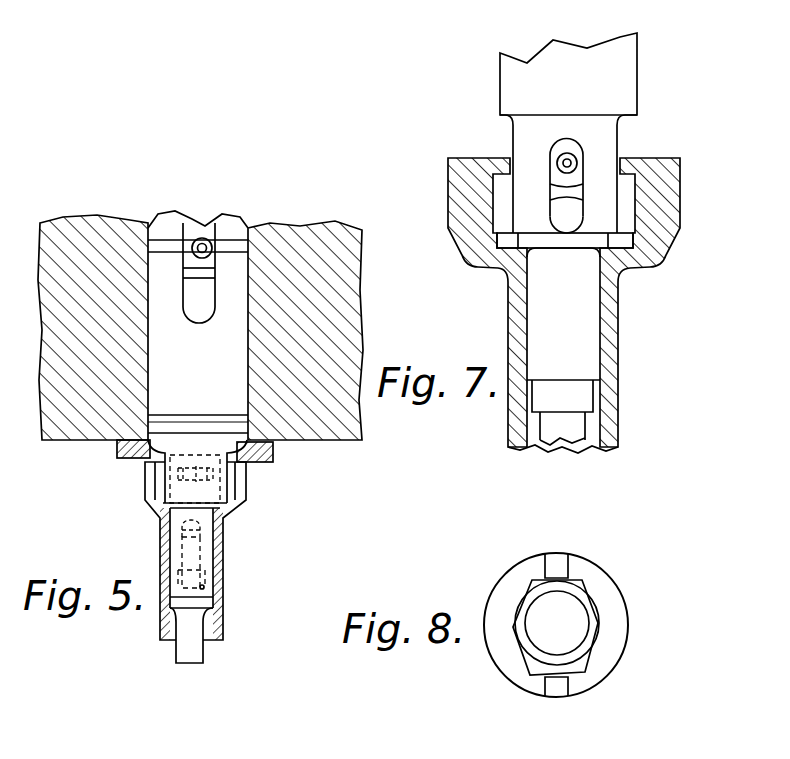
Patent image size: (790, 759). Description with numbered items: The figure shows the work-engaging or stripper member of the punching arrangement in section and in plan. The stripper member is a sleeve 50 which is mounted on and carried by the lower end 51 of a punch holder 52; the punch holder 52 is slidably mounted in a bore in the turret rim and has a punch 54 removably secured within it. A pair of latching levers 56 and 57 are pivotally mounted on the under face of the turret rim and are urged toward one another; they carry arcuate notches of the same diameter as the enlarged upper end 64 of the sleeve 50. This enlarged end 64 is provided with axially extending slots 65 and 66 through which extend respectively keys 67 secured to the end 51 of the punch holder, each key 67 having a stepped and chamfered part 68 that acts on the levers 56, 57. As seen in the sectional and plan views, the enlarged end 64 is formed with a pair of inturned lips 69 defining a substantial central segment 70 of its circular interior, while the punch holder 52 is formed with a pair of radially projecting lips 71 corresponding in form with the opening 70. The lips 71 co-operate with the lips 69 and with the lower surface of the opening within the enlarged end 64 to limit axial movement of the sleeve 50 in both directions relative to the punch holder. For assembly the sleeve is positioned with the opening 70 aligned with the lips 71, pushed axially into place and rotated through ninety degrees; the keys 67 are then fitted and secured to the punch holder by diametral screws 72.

In FIG. 5, the sleeve 50 is at (222, 631).
In FIG. 7, the sleeve 50 is at (618, 338).
In FIG. 5, the lower end of punch holder 51 is at (208, 567).
In FIG. 5, the punch holder 52 is at (238, 283).
In FIG. 7, the punch holder 52 is at (620, 77).
In FIG. 5, the punch 54 is at (193, 657).
In FIG. 5, the latching lever 56 is at (123, 458).
In FIG. 5, the latching lever 57 is at (263, 461).
In FIG. 5, the enlarged upper end of stripping sleeve 64 is at (227, 511).
In FIG. 7, the enlarged upper end of stripping sleeve 64 is at (670, 207).
In FIG. 8, the enlarged upper end of stripping sleeve 64 is at (620, 628).
In FIG. 5, the axially extending slot 65 is at (147, 474).
In FIG. 5, the axially extending slot 66 is at (242, 483).
In FIG. 8, the axially extending slot 66 is at (558, 558).
In FIG. 5, the key 67 is at (157, 521).
In FIG. 7, the key 67 is at (563, 217).
In FIG. 5, the stepped and chamfered part 68 is at (157, 498).
In FIG. 7, the inturned lip 69 is at (510, 160).
In FIG. 8, the central segment (opening) 70 is at (583, 590).
In FIG. 7, the radially projecting lip 71 is at (508, 240).
In FIG. 7, the diametral screw 72 is at (573, 158).